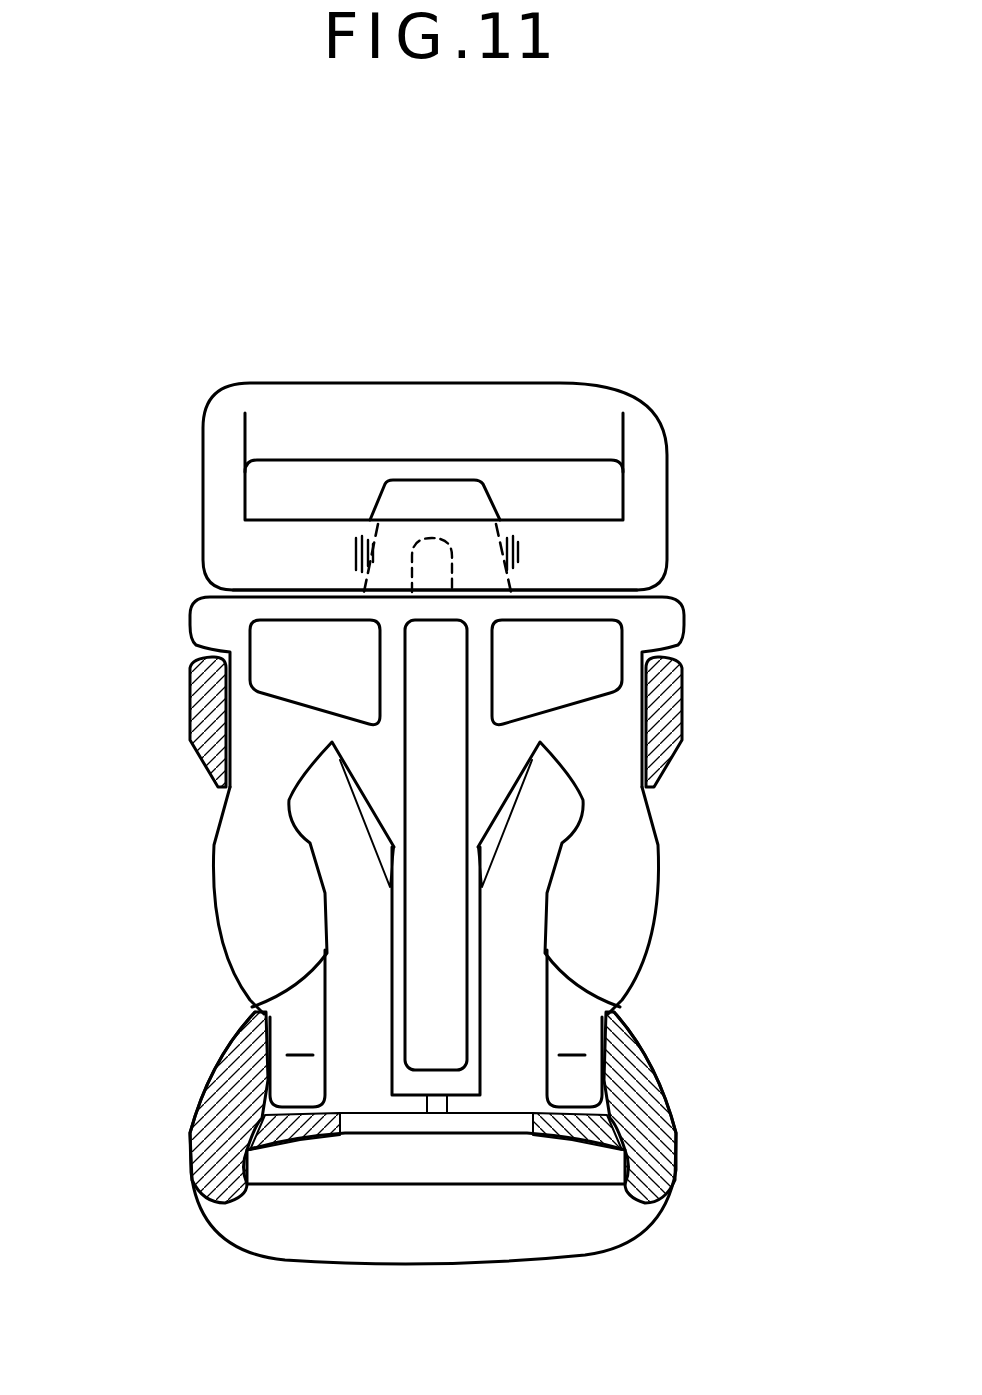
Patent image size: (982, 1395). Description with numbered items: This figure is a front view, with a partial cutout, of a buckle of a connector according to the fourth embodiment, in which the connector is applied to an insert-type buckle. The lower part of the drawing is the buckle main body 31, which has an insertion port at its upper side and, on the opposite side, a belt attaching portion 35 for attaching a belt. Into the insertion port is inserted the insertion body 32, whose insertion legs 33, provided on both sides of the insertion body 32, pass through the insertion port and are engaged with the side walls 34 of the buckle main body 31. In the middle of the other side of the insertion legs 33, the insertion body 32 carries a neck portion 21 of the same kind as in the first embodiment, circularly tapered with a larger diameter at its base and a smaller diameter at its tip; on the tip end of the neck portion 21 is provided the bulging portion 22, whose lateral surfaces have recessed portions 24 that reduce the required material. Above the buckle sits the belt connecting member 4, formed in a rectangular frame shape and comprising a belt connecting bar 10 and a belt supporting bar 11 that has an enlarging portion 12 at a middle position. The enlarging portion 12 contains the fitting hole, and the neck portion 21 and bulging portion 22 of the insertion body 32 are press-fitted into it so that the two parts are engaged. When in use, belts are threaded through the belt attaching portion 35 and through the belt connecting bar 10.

The belt connecting member 4 is at (563, 386).
The belt connecting bar 10 is at (298, 413).
The belt supporting bar 11 is at (598, 552).
The enlarging portion 12 is at (505, 523).
The neck portion 21 is at (346, 545).
The bulging portion 22 is at (410, 493).
The recessed portions 24 is at (432, 538).
The buckle main body 31 is at (672, 1110).
The insertion body 32 is at (680, 616).
The insertion legs 33 is at (262, 907).
The side walls 34 is at (200, 702).
The belt attaching portion 35 is at (427, 1207).